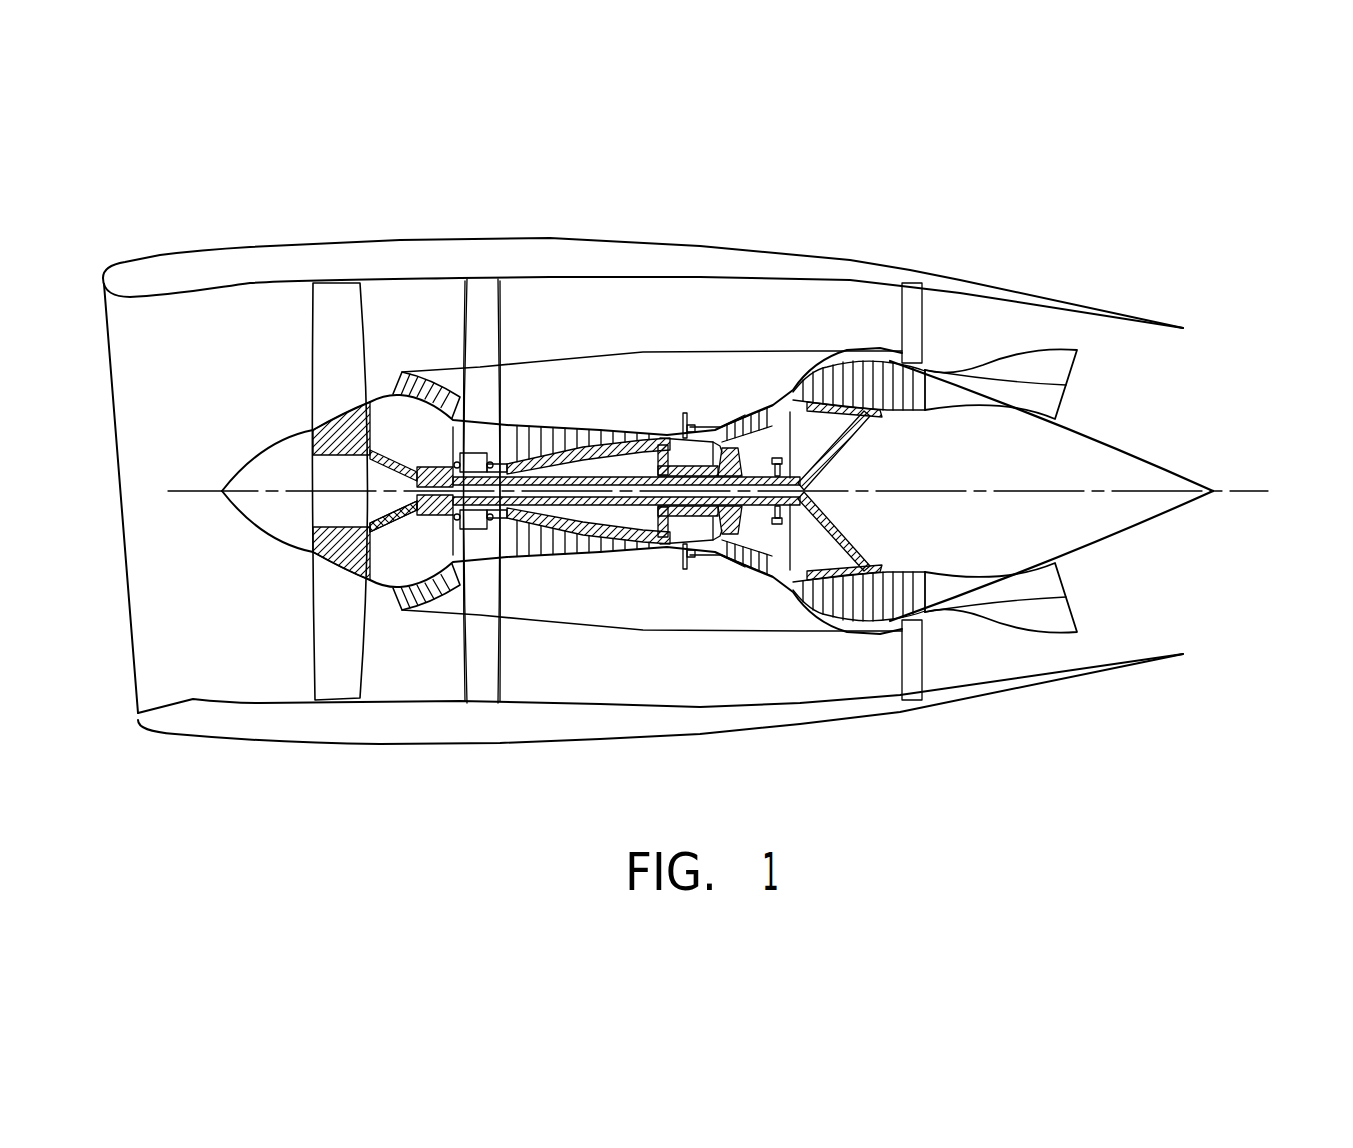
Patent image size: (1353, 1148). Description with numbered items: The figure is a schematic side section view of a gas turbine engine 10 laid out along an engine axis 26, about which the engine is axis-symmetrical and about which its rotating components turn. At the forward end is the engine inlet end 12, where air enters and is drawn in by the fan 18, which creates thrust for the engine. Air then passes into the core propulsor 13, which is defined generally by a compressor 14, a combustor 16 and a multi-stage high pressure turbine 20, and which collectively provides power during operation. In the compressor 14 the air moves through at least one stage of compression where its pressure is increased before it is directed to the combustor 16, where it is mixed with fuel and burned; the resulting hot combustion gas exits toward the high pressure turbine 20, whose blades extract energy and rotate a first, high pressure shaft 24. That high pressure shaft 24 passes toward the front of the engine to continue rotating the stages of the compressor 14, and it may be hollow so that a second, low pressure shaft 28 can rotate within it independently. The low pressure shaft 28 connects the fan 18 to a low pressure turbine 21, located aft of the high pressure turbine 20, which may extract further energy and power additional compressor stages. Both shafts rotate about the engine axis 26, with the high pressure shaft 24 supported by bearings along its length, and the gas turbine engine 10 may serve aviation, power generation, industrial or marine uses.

The gas turbine engine 10 is at (680, 448).
The engine inlet end 12 is at (125, 330).
The core propulsor 13 is at (643, 350).
The compressor 14 is at (545, 420).
The combustor 16 is at (705, 413).
The fan 18 is at (278, 343).
The multi-stage high pressure turbine 20 is at (755, 403).
The low pressure turbine 21 is at (878, 425).
The high pressure shaft 24 is at (678, 553).
The engine axis 26 is at (1268, 491).
The low pressure shaft 28 is at (594, 505).